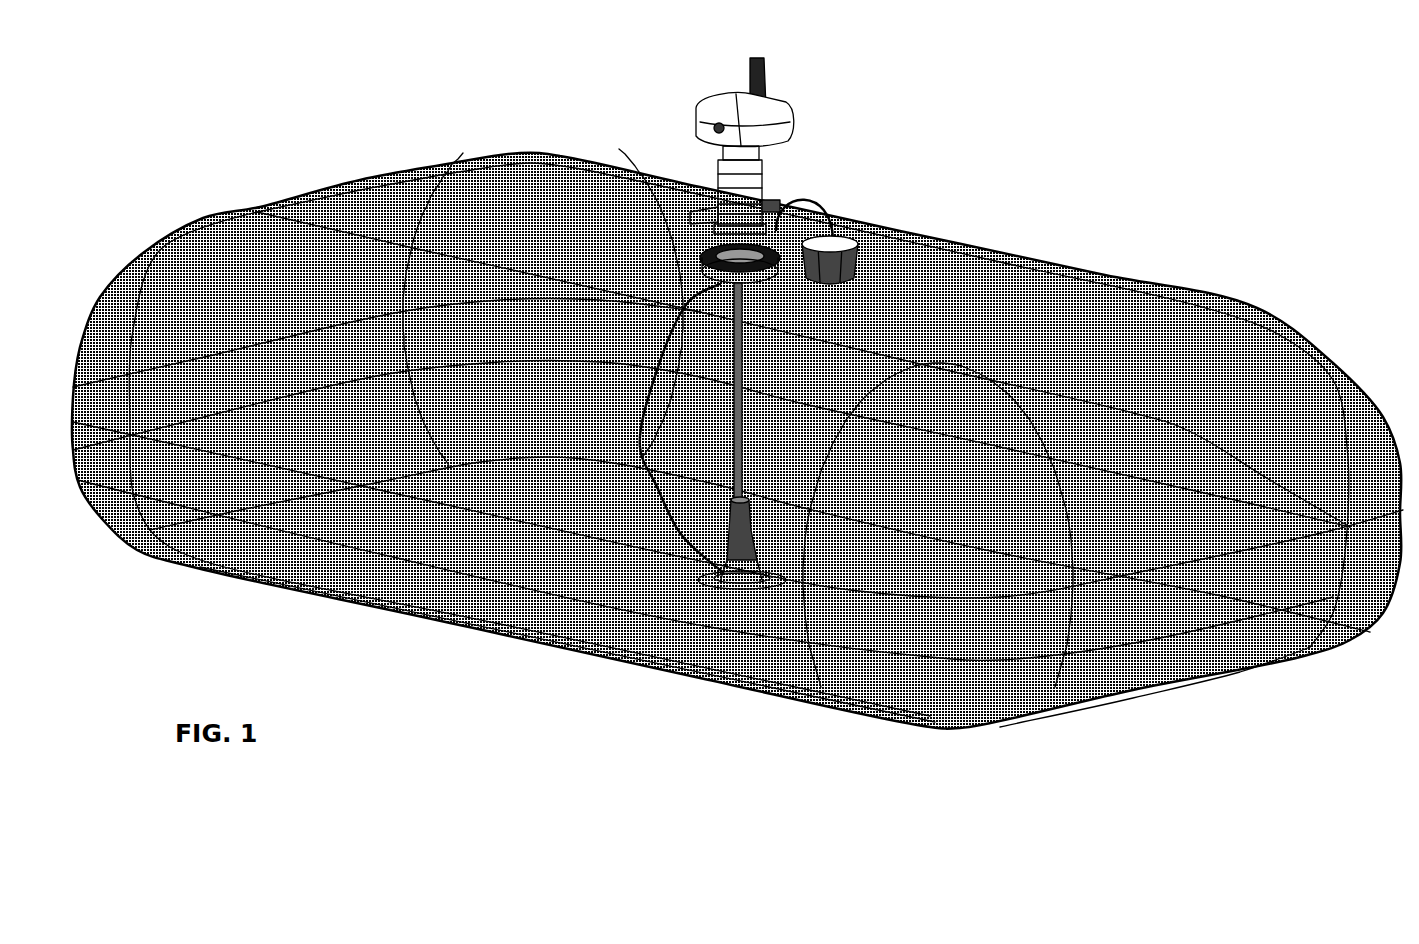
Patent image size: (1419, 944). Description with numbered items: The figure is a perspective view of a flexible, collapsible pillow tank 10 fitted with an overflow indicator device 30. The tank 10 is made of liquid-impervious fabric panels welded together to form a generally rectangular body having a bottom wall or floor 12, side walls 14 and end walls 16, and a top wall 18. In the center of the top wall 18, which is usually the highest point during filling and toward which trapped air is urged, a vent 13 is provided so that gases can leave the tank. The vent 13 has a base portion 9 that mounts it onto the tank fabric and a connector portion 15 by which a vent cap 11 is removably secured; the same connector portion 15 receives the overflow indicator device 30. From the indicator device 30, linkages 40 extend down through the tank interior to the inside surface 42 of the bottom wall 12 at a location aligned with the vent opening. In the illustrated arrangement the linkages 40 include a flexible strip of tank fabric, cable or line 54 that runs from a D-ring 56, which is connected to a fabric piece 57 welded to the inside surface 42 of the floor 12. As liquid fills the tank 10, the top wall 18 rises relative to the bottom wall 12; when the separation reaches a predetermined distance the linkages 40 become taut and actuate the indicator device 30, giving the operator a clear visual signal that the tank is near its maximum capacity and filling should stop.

The base portion 9 is at (800, 236).
The pillow tank 10 is at (985, 728).
The vent cap 11 is at (860, 243).
The bottom wall 12 is at (447, 627).
The vent 13 is at (818, 206).
The side walls 14 is at (260, 443).
The connector portion 15 is at (778, 205).
The end walls 16 is at (1217, 595).
The top wall 18 is at (987, 273).
The overflow indicator device 30 is at (690, 88).
The linkages 40 is at (665, 428).
The inside surface 42 is at (765, 635).
The line 54 is at (732, 437).
The D-ring 56 is at (750, 541).
The fabric piece 57 is at (773, 584).